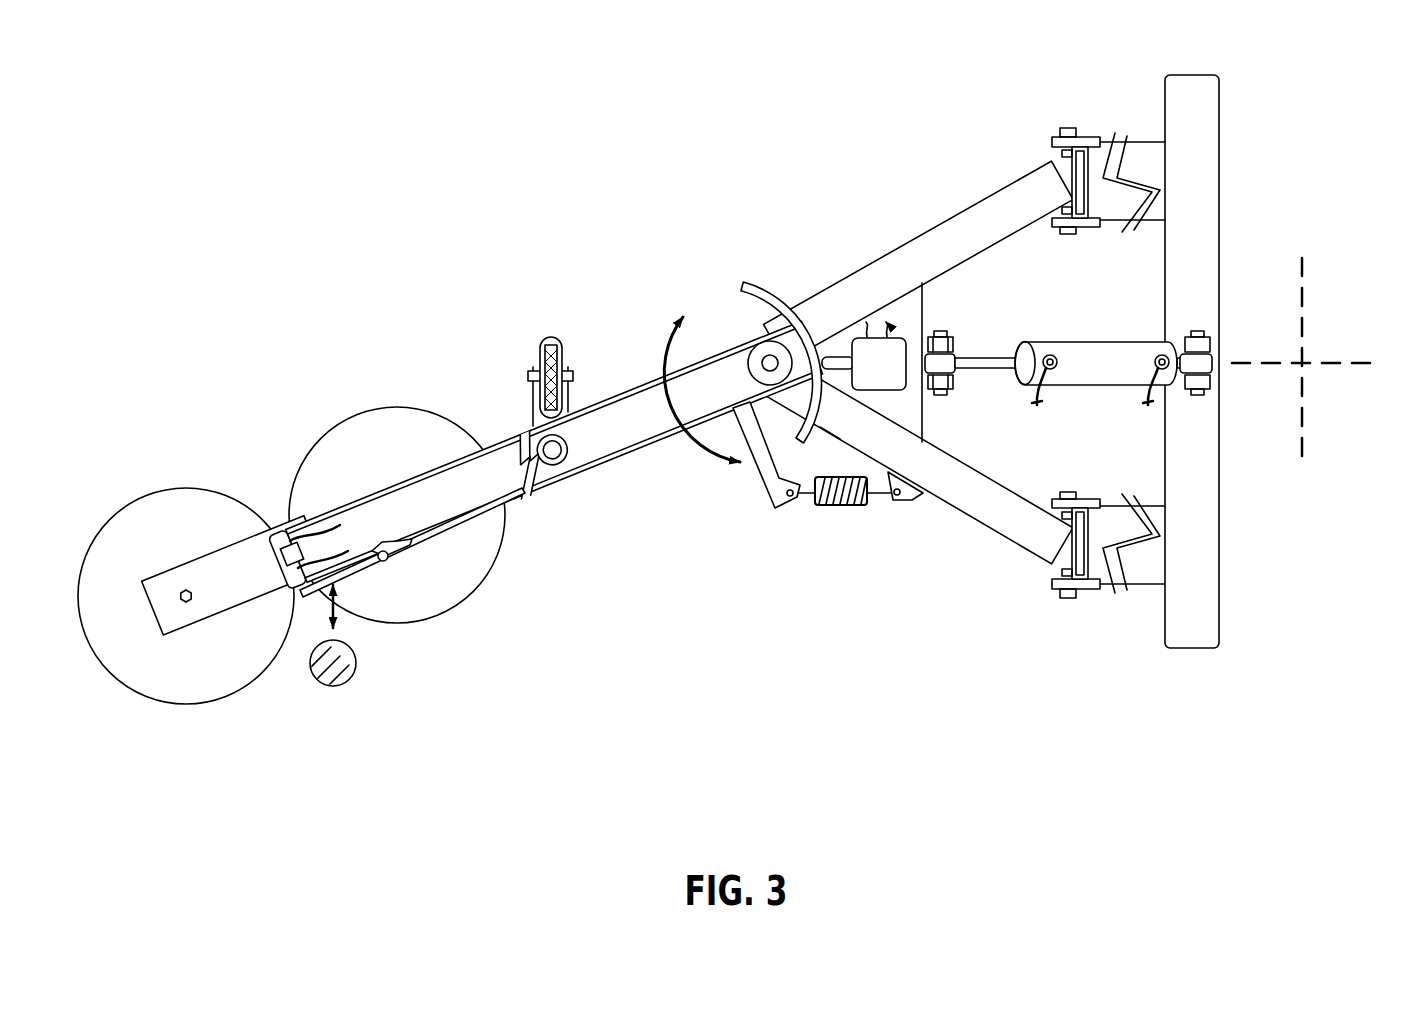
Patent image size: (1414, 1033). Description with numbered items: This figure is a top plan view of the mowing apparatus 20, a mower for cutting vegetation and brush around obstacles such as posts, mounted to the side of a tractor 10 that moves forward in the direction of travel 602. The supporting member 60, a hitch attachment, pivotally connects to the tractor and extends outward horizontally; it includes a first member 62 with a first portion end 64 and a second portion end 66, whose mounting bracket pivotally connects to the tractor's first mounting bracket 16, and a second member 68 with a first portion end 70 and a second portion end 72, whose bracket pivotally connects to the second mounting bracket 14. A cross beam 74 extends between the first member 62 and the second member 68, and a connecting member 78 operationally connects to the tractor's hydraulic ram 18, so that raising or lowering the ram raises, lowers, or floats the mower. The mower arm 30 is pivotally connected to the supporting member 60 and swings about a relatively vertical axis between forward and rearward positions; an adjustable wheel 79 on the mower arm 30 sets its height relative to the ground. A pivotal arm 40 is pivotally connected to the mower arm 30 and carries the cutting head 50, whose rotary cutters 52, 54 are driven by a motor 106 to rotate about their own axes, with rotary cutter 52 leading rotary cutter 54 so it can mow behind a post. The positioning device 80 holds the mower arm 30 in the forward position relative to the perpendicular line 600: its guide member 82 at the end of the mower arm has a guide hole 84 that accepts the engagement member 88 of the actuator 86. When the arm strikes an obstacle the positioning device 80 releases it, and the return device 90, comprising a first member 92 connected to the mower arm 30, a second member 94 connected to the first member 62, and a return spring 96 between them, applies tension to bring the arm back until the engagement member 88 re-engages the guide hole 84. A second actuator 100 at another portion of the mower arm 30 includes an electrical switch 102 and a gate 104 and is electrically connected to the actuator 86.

The tractor 10 is at (1222, 590).
The second mounting bracket 14 is at (1095, 148).
The first mounting bracket 16 is at (336, 688).
The hydraulic ram 18 is at (1081, 341).
The mowing apparatus 20 is at (320, 195).
The mower arm 30 is at (621, 440).
The pivotal arm 40 is at (238, 592).
The cutting head 50 is at (291, 545).
The rotary cutter 52 is at (210, 680).
The rotary cutter 54 is at (395, 454).
The supporting member 60 is at (914, 322).
The first member 62 is at (960, 489).
The first portion end 64 is at (828, 436).
The second portion end 66 is at (1040, 563).
The second member 68 is at (963, 255).
The first portion end 70 is at (861, 291).
The second portion end 72 is at (1050, 157).
The cross beam 74 is at (924, 316).
The connecting member 78 is at (957, 384).
The wheel 79 is at (568, 362).
The positioning device 80 is at (787, 273).
The guide member 82 is at (739, 282).
The guide hole 84 is at (758, 469).
The actuator 86 is at (890, 372).
The engagement member 88 is at (823, 378).
The return device 90 is at (820, 518).
The first member 92 is at (769, 508).
The second member 94 is at (910, 501).
The return spring 96 is at (845, 507).
The second actuator 100 is at (416, 583).
The electrical switch 102 is at (385, 576).
The gate 104 is at (419, 552).
The motor 106 is at (309, 551).
The perpendicular line 600 is at (1343, 363).
The direction of travel 602 is at (1306, 306).